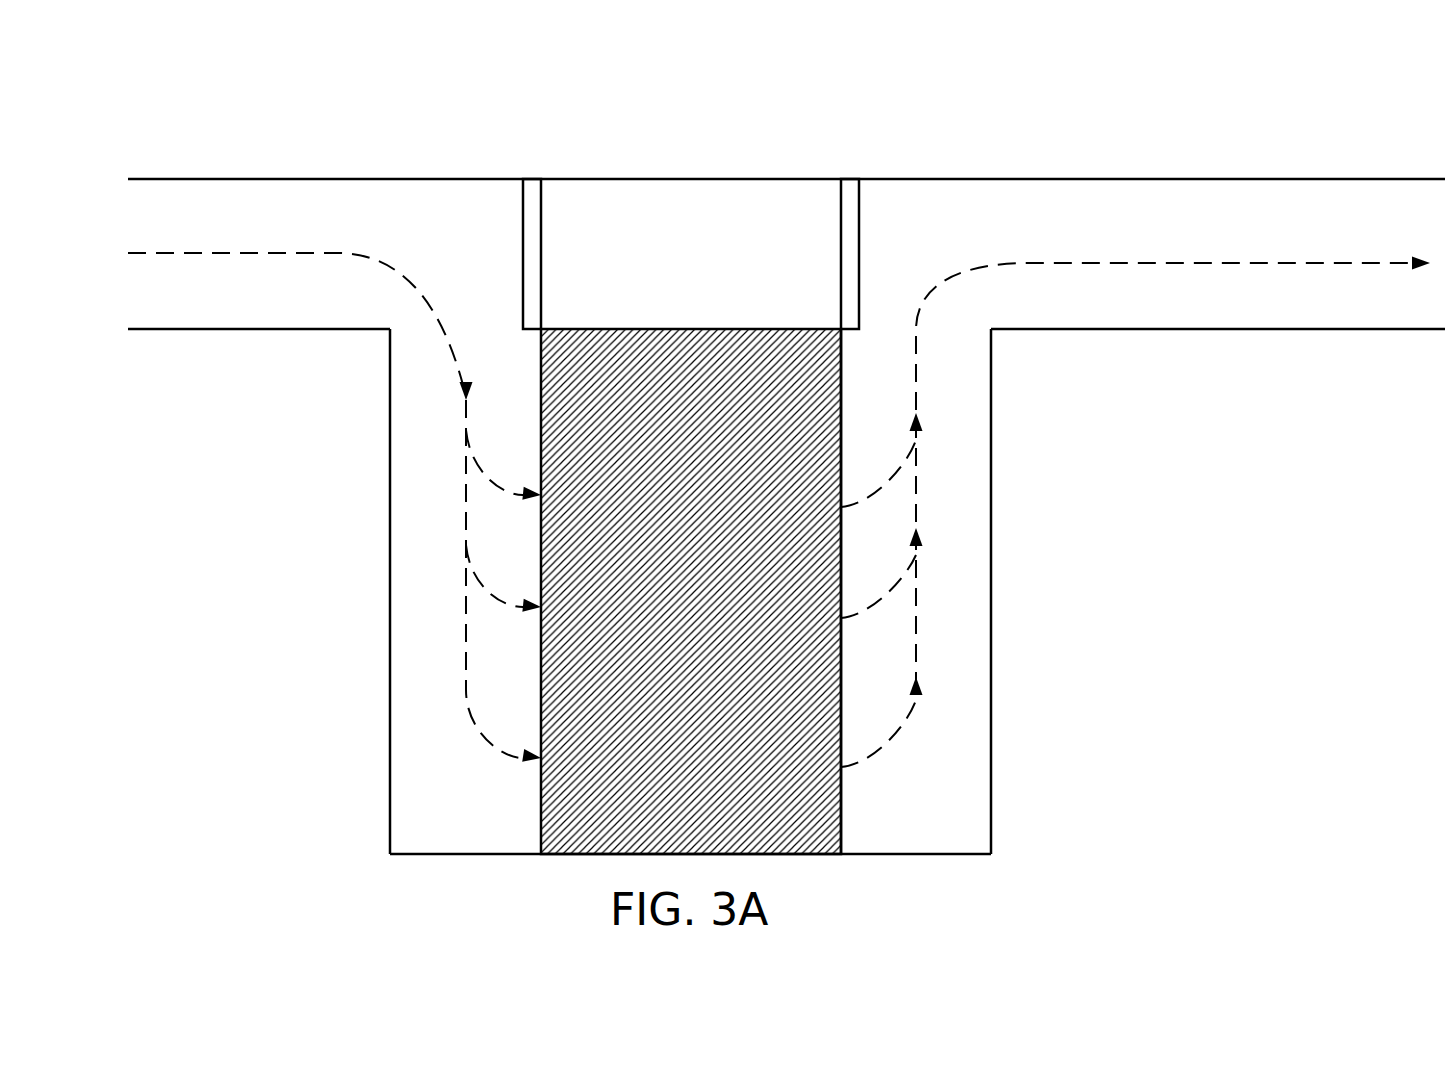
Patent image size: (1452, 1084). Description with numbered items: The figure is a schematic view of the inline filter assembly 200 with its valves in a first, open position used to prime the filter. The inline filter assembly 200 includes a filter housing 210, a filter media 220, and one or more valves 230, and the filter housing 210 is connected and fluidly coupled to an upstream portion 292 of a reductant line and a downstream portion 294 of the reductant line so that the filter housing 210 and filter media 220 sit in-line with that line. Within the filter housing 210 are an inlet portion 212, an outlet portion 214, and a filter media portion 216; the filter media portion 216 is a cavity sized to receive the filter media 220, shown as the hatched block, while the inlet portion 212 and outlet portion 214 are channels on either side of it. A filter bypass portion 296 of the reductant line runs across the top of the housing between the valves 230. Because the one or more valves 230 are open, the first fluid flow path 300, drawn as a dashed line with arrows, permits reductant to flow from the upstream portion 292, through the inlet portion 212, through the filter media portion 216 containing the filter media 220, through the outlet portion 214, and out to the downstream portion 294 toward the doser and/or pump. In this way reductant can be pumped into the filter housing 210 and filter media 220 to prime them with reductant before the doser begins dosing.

The inline filter assembly 200 is at (1057, 460).
The filter housing 210 is at (390, 535).
The inlet portion 212 is at (410, 473).
The outlet portion 214 is at (970, 594).
The filter media portion 216 is at (850, 698).
The filter media 220 is at (691, 591).
The valves 230 is at (530, 205).
The upstream portion of the reductant line 292 is at (190, 190).
The downstream portion of the reductant line 294 is at (1407, 190).
The filter bypass portion 296 is at (713, 188).
The first fluid flow path 300 is at (337, 253).